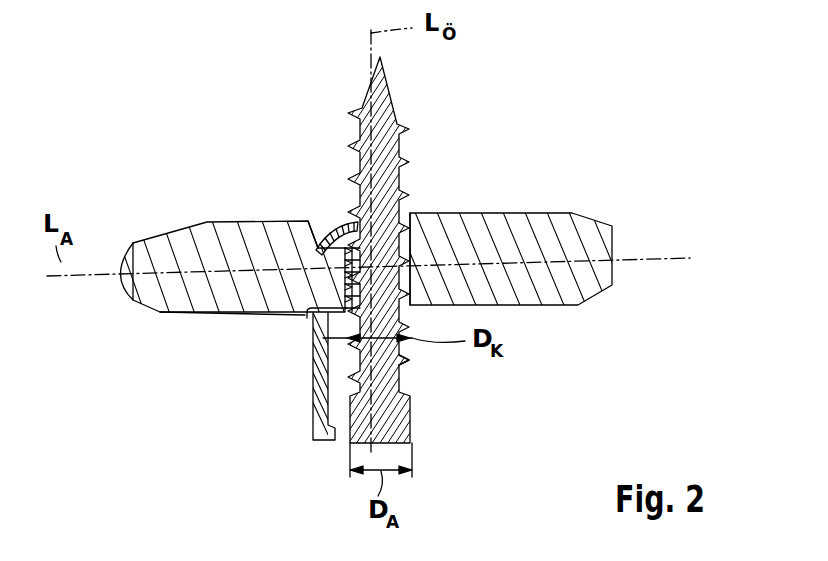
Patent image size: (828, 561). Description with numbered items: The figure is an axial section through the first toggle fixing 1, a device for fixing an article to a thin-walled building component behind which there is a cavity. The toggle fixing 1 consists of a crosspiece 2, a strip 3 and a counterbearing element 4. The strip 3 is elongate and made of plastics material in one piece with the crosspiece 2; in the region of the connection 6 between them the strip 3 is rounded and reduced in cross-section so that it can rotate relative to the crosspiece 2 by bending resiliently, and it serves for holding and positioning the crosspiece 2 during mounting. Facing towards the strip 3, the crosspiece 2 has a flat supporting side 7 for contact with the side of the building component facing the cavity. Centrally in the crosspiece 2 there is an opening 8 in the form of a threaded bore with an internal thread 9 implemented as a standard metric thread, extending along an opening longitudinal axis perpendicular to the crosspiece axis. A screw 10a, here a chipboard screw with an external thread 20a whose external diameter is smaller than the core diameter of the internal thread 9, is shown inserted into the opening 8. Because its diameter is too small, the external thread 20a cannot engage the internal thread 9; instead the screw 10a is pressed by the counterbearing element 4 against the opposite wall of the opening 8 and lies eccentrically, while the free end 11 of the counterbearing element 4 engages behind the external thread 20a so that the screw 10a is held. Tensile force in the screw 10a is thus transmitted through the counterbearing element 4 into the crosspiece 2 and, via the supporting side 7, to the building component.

The toggle fixing 1 is at (596, 197).
The crosspiece 2 is at (192, 246).
The strip 3 is at (322, 413).
The counterbearing element 4 is at (330, 232).
The connection 6 is at (318, 318).
The supporting side 7 is at (215, 316).
The opening 8 is at (412, 250).
The internal thread 9 is at (300, 313).
The screw 10a is at (398, 373).
The free end 11 is at (362, 220).
The external thread 20a is at (356, 222).